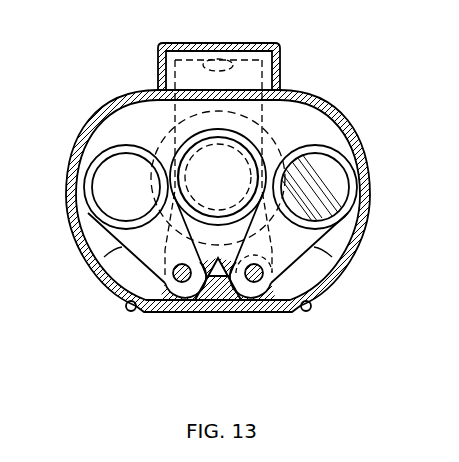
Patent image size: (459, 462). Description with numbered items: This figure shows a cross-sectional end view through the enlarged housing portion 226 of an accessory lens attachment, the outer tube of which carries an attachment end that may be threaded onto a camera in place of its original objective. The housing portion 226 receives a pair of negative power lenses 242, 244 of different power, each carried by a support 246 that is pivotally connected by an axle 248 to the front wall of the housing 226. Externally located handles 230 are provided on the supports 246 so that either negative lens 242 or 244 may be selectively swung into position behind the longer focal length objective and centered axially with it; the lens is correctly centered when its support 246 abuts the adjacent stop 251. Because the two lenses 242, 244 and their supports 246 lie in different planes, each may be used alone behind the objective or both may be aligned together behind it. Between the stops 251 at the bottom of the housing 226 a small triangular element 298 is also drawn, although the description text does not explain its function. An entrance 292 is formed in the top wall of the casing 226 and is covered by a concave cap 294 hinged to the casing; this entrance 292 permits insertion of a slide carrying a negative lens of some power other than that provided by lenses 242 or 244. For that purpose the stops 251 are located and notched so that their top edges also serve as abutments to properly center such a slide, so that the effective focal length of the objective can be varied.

The enlarged housing portion 226 is at (357, 128).
The concave cap 294 is at (205, 43).
The entrance 292 is at (253, 90).
The negative power lens 242 is at (90, 188).
The negative power lens 244 is at (353, 193).
The support 246 is at (104, 257).
The handle 230 is at (125, 305).
The axle 248 is at (176, 284).
The triangular key 298 is at (212, 279).
The stop 251 is at (230, 300).